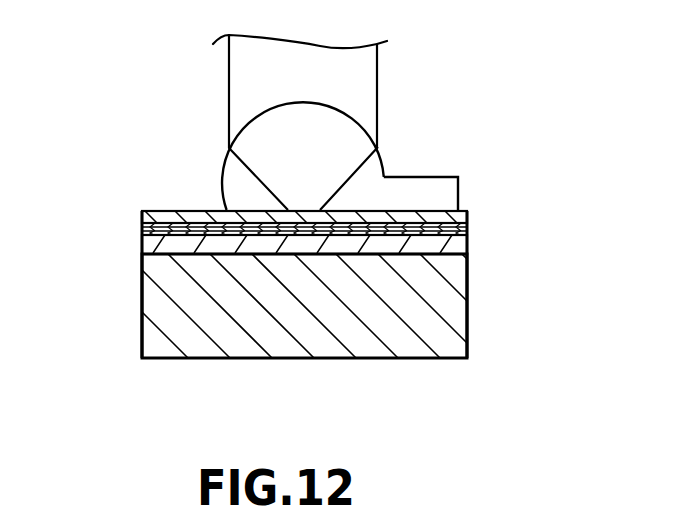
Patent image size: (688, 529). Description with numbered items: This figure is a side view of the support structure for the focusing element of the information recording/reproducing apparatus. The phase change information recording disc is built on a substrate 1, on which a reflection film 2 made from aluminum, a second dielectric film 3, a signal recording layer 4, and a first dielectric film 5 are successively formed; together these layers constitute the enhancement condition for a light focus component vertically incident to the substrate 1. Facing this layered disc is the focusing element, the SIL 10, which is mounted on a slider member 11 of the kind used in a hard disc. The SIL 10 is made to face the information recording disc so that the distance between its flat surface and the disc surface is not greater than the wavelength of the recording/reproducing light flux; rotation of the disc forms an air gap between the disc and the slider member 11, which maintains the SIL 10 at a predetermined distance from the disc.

The substrate 1 is at (158, 298).
The reflection film 2 is at (141, 250).
The second dielectric film 3 is at (140, 233).
The signal recording layer 4 is at (140, 227).
The first dielectric film 5 is at (140, 218).
The SIL 10 is at (264, 137).
The slider member 11 is at (417, 197).